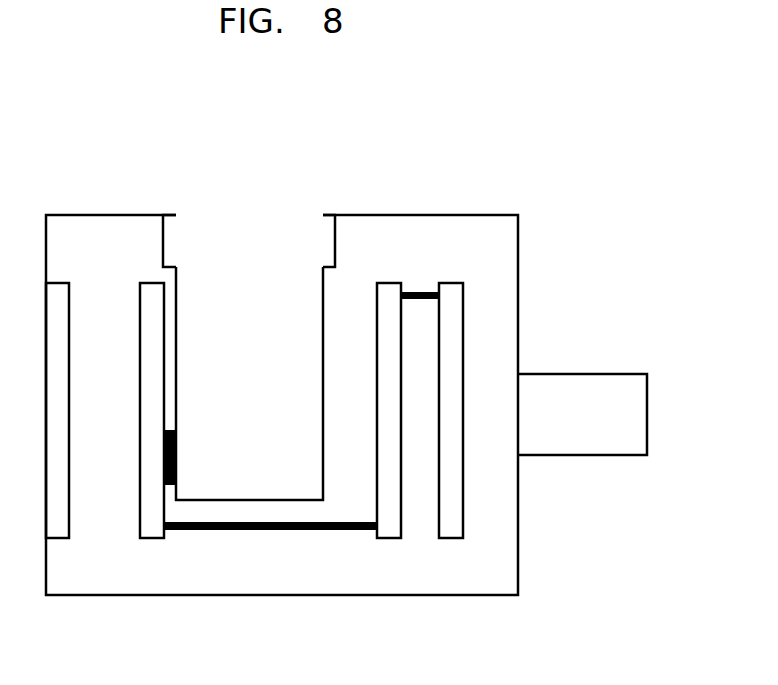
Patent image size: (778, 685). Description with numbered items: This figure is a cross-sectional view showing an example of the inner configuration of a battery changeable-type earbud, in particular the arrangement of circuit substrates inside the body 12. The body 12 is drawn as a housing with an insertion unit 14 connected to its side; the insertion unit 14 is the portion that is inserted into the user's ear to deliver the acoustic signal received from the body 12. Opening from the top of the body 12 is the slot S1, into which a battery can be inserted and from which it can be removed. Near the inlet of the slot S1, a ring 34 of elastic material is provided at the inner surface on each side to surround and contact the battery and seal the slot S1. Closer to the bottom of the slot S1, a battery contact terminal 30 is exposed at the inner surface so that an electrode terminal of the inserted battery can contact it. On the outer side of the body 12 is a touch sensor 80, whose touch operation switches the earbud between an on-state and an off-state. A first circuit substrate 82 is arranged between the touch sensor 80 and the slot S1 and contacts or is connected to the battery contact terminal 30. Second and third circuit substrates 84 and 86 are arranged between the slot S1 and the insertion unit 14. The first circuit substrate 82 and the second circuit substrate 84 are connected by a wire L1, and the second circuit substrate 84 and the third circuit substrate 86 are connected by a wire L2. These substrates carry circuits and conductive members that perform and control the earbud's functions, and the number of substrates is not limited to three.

The body 12 is at (483, 225).
The insertion unit 14 is at (582, 383).
The battery contact terminal 30 is at (176, 458).
The ring 34 is at (163, 240).
The touch sensor 80 is at (57, 538).
The first circuit substrate 82 is at (150, 538).
The second circuit substrate 84 is at (390, 538).
The third circuit substrate 86 is at (451, 538).
The wire L1 is at (270, 530).
The wire L2 is at (423, 290).
The slot S1 is at (264, 371).